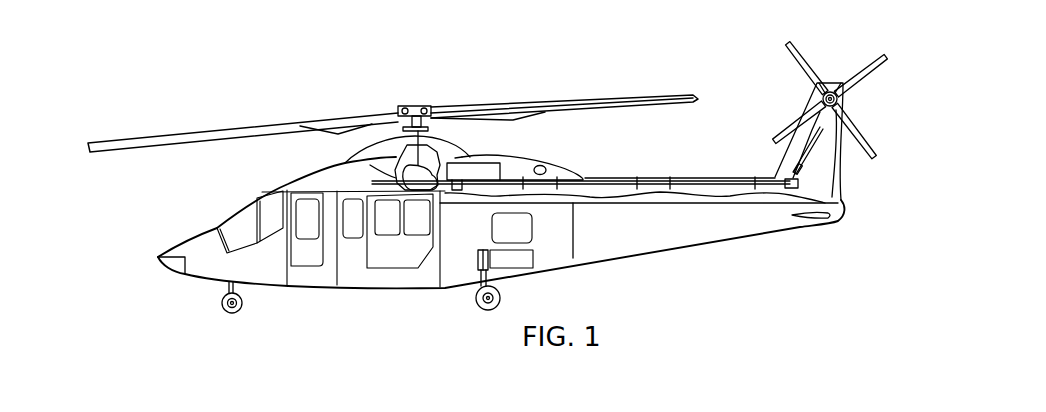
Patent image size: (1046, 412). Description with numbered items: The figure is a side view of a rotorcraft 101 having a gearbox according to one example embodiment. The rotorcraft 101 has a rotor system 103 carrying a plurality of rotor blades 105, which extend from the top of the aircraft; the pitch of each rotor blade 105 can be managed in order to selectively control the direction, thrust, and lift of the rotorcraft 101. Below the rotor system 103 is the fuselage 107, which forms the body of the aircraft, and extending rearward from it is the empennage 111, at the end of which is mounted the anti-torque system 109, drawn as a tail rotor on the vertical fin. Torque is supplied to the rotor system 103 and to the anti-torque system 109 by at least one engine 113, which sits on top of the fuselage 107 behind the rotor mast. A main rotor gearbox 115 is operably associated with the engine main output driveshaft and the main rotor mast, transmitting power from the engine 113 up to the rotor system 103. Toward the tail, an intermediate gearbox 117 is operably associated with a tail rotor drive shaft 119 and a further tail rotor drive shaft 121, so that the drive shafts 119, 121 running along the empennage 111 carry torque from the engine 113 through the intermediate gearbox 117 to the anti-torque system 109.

The rotorcraft 101 is at (290, 68).
The rotor system 103 is at (437, 88).
The rotor blades 105 is at (637, 95).
The fuselage 107 is at (352, 291).
The anti-torque system 109 is at (842, 53).
The empennage 111 is at (650, 250).
The engine 113 is at (513, 160).
The main rotor gearbox 115 is at (396, 177).
The intermediate gearbox 117 is at (812, 212).
The tail rotor drive shaft 119 is at (703, 185).
The tail rotor drive shaft 121 is at (803, 183).